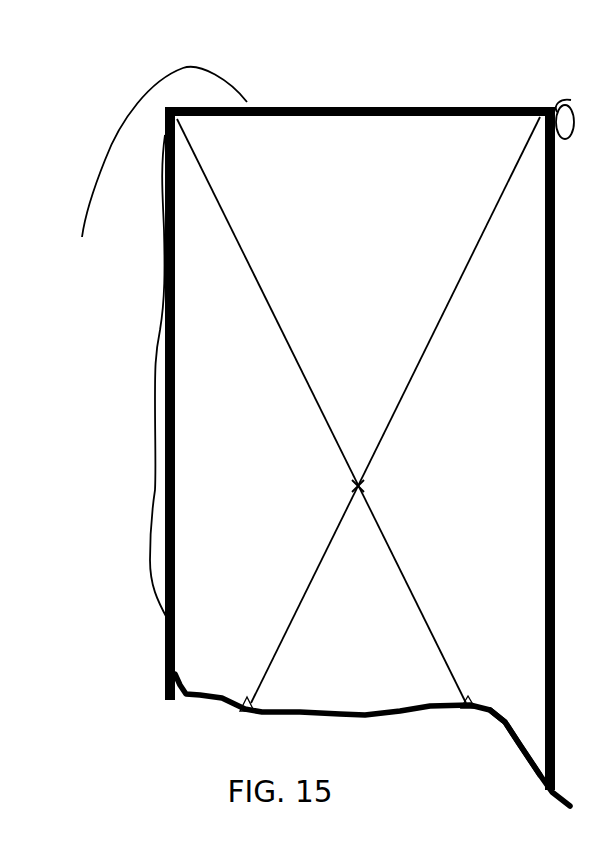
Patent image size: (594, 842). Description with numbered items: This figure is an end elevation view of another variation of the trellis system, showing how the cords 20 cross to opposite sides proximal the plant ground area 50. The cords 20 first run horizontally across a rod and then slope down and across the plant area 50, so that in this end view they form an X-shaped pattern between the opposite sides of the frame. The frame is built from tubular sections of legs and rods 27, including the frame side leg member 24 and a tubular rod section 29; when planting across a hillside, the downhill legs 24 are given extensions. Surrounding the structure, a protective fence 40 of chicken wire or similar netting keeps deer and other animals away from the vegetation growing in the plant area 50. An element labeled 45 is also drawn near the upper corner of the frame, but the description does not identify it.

The trellis cords 20 is at (296, 350).
The frame side leg member 24 is at (545, 393).
The tubular sections of legs and rods 27 is at (358, 482).
The tubular rod section 29 is at (545, 751).
The protective fence 40 is at (153, 376).
The clip 45 is at (571, 100).
The plant ground area 50 is at (372, 740).